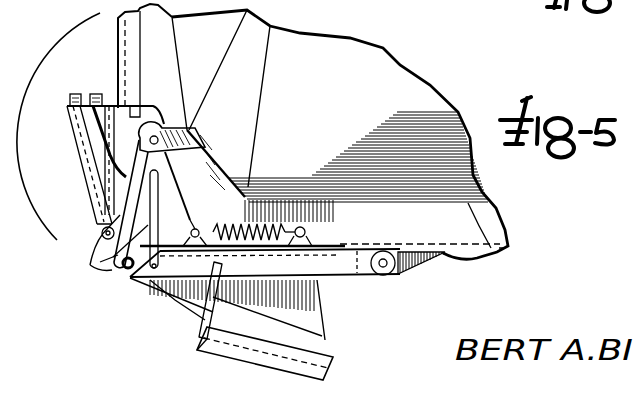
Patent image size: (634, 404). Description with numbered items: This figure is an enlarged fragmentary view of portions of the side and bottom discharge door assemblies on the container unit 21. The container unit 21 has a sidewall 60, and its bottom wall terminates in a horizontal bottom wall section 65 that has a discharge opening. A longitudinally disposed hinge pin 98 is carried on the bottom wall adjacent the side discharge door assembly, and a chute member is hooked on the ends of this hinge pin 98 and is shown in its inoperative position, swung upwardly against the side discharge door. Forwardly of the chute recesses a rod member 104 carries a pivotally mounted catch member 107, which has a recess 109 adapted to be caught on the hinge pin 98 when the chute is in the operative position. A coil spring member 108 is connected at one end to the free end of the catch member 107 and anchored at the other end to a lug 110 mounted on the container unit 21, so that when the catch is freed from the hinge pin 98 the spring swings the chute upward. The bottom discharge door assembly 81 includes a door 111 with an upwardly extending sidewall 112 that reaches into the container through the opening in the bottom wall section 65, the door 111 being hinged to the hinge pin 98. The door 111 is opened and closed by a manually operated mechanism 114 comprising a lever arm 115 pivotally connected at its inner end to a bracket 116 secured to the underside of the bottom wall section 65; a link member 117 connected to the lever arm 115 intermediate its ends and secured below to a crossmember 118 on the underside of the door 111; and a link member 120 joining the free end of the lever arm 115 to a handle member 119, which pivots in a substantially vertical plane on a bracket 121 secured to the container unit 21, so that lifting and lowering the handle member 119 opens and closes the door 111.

The container unit 21 is at (358, 130).
The sidewall 60 is at (118, 60).
The horizontal bottom wall section 65 is at (478, 258).
The bottom discharge door assembly 81 is at (148, 302).
The hinge pin 98 is at (122, 270).
The rod member 104 is at (90, 252).
The catch member 107 is at (182, 171).
The coil spring member 108 is at (268, 197).
The recess 109 is at (108, 263).
The lug 110 is at (93, 140).
The door 111 is at (272, 355).
The sidewall 112 is at (342, 344).
The manually operated mechanism 114 is at (250, 325).
The lever arm 115 is at (344, 278).
The bracket 116 is at (412, 270).
The link member 117 is at (190, 312).
The crossmember 118 is at (212, 352).
The handle member 119 is at (118, 197).
The link member 120 is at (239, 220).
The bracket 121 is at (200, 130).